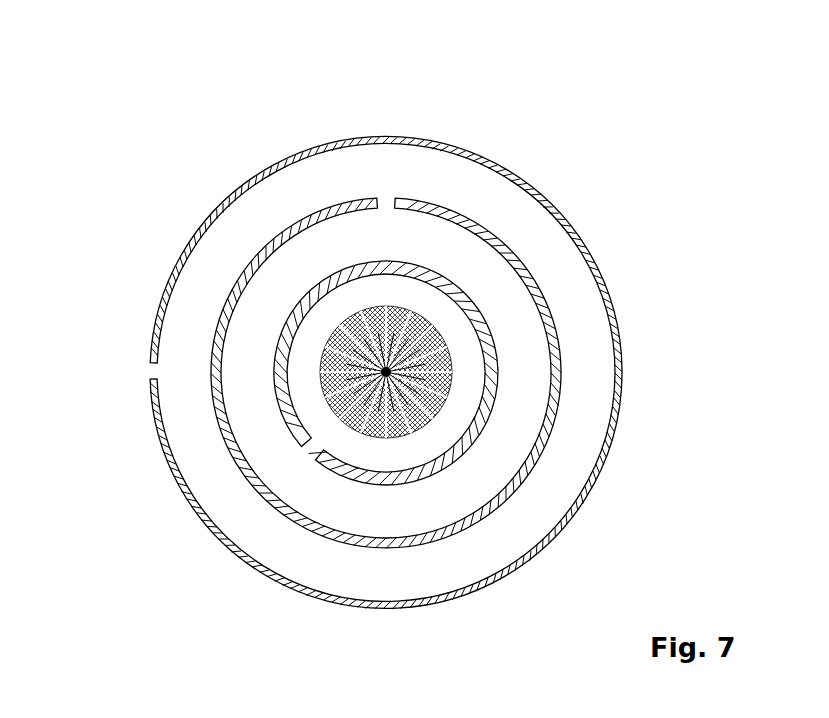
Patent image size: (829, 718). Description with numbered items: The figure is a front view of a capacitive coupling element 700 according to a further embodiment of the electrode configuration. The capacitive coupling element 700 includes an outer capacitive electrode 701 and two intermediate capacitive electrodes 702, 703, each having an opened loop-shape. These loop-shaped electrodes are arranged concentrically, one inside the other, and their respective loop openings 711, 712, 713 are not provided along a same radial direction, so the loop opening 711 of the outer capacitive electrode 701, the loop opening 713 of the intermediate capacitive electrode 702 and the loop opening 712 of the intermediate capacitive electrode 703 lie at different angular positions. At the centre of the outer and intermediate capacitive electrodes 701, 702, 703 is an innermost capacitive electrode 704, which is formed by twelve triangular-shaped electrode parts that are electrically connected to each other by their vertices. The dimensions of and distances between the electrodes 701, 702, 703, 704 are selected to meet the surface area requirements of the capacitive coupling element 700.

The capacitive coupling element 700 is at (108, 157).
The outer capacitive electrode 701 is at (593, 262).
The intermediate capacitive electrode 702 is at (563, 360).
The intermediate capacitive electrode 703 is at (497, 407).
The innermost capacitive electrode 704 is at (408, 445).
The loop opening 711 is at (152, 377).
The loop opening 712 is at (308, 452).
The loop opening 713 is at (387, 200).